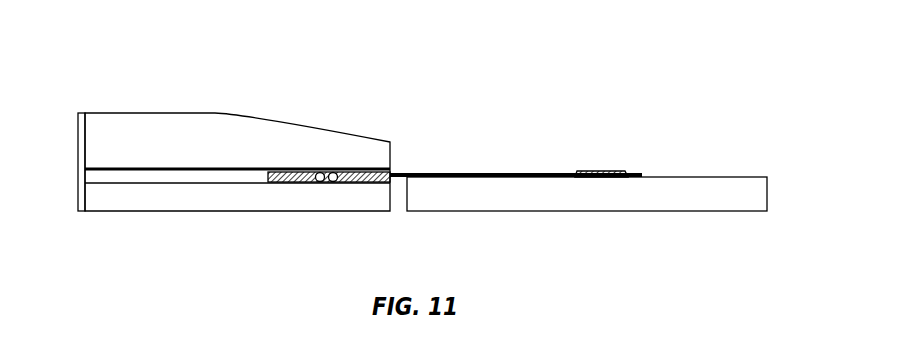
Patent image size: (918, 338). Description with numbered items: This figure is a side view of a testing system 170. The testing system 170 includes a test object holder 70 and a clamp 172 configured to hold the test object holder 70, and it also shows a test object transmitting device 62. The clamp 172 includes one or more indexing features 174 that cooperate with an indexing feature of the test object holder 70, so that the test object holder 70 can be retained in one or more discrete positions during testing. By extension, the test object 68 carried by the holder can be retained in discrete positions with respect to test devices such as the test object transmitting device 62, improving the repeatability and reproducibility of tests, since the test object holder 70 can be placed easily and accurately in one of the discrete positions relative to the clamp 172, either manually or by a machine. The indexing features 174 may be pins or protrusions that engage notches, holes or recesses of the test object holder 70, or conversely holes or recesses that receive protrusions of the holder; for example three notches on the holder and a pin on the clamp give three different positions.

The testing system 170 is at (584, 60).
The clamp 172 is at (132, 131).
The indexing features 174 is at (327, 168).
The test object holder 70 is at (413, 174).
The test object 68 is at (607, 168).
The test object transmitting device 62 is at (712, 195).